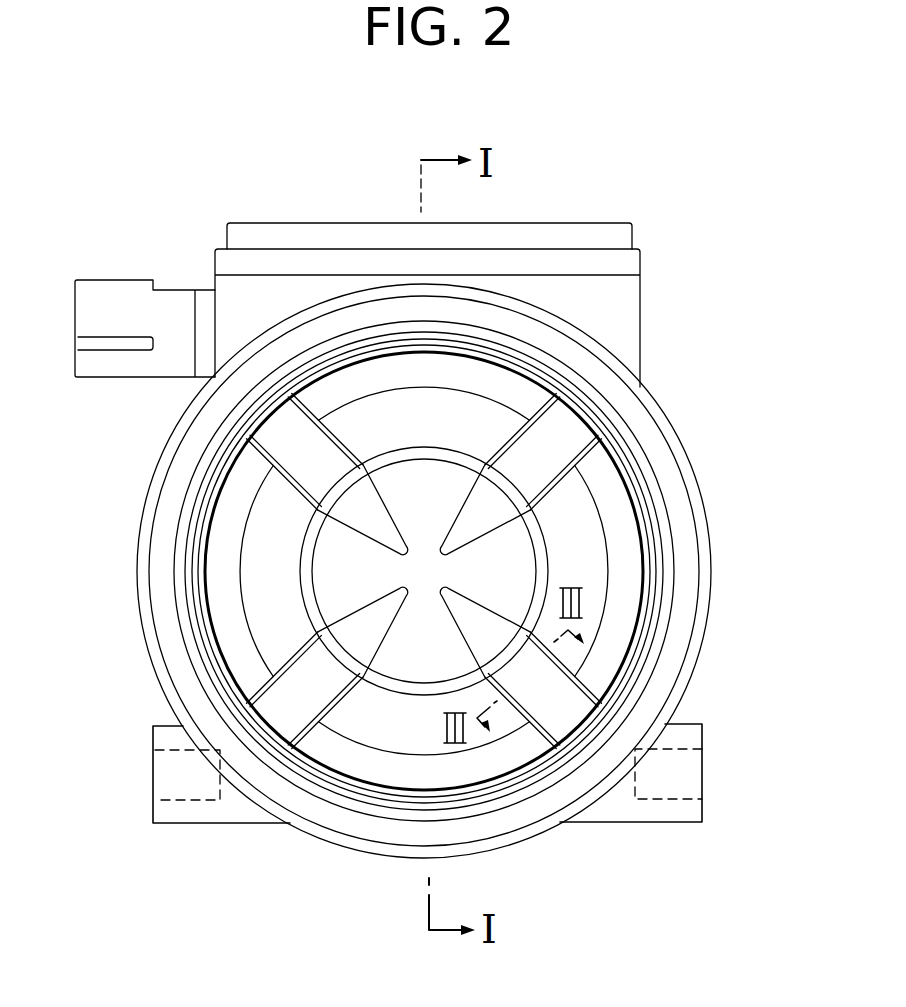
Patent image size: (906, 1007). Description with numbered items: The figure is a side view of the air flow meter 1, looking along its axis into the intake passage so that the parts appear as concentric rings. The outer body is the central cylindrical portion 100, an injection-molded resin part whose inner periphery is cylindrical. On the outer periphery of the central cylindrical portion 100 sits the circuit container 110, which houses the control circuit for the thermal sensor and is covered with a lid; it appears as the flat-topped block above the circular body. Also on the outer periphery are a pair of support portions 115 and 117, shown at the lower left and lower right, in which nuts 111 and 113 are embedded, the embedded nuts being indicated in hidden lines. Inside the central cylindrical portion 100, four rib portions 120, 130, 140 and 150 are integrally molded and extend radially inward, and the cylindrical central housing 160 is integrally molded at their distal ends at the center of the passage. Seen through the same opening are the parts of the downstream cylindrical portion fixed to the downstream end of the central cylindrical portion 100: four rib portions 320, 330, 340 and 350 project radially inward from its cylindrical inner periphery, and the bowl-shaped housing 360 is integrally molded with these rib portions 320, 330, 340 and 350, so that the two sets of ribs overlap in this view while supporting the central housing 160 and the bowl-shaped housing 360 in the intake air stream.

The air flow meter 1 is at (565, 188).
The central cylindrical portion 100 is at (657, 407).
The circuit container 110 is at (615, 203).
The nut 111 is at (173, 770).
The nut 113 is at (682, 785).
The support portion 115 is at (192, 802).
The support portion 117 is at (660, 800).
The rib portion 120 is at (260, 458).
The rib portion 130 is at (293, 650).
The rib portion 140 is at (562, 503).
The rib portion 150 is at (565, 660).
The central housing 160 is at (412, 690).
The rib portion 320 is at (290, 433).
The rib portion 330 is at (290, 705).
The rib portion 340 is at (565, 447).
The rib portion 350 is at (562, 702).
The bowl-shaped housing 360 is at (403, 667).